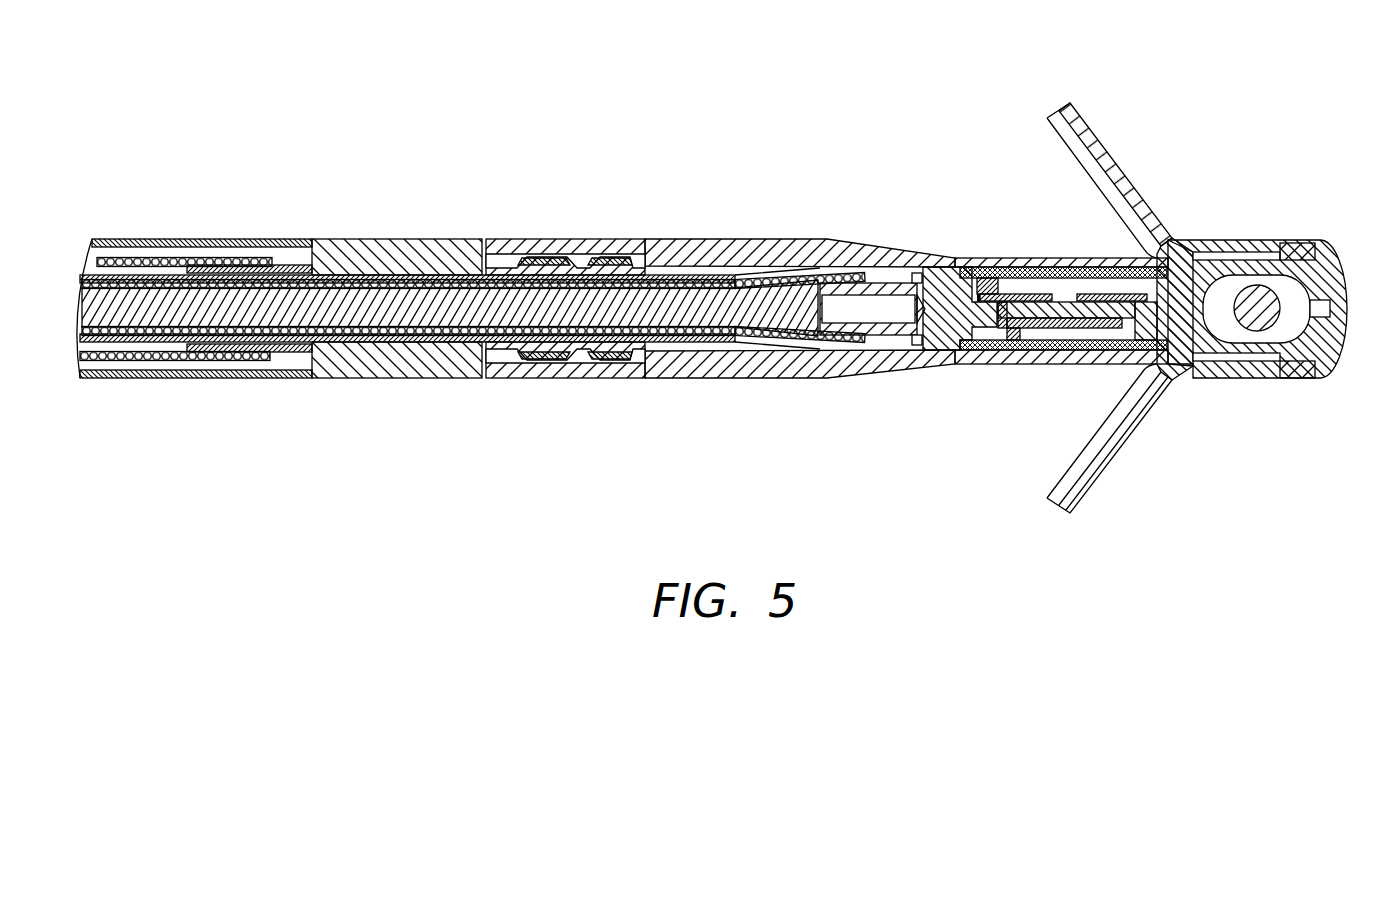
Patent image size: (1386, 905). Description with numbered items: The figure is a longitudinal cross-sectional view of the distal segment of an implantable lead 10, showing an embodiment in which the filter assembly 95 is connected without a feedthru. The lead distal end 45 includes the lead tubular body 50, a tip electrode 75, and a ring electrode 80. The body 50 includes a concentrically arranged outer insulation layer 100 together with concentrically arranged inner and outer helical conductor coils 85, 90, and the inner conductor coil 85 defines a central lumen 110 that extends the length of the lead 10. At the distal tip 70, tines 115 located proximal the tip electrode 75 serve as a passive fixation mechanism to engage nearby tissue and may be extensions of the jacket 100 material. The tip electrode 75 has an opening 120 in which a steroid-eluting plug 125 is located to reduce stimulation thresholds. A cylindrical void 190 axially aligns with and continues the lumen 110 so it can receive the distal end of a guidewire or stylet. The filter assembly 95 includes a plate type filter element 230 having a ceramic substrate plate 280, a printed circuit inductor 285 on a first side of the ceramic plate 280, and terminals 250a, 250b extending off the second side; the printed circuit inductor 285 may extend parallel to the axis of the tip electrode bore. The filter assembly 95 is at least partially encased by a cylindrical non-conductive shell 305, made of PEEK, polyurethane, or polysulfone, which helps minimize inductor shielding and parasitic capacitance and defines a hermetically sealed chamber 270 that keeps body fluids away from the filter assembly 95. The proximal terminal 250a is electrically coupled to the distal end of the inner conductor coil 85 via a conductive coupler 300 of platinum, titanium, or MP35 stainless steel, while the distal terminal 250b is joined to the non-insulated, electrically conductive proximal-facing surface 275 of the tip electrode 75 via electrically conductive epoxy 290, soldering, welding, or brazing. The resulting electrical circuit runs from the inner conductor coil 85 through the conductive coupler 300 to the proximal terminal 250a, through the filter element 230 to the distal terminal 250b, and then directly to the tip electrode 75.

The lead 10 is at (583, 125).
The lead distal end 45 is at (772, 125).
The lead tubular body 50 is at (618, 240).
The distal tip 70 is at (1336, 417).
The tip electrode 75 is at (1342, 350).
The ring electrode 80 is at (400, 240).
The inner conductor coil 85 is at (770, 345).
The outer conductor coil 90 is at (193, 250).
The filter assembly 95 is at (1057, 402).
The outer insulation layer 100 is at (136, 240).
The central lumen 110 is at (398, 312).
The tines 115 is at (1105, 160).
The opening 120 is at (1230, 290).
The steroid-eluting plug 125 is at (1262, 290).
The cylindrical void 190 is at (848, 312).
The plate type filter element 230 is at (1092, 328).
The proximal terminal 250a is at (972, 268).
The distal terminal 250b is at (1100, 270).
The hermetically sealed chamber 270 is at (1010, 294).
The proximal-facing surface 275 is at (1176, 262).
The ceramic substrate plate 280 is at (945, 352).
The printed circuit inductor 285 is at (1000, 320).
The electrically conductive epoxy 290 is at (1165, 358).
The conductive coupler 300 is at (935, 356).
The non-conductive shell 305 is at (1020, 268).